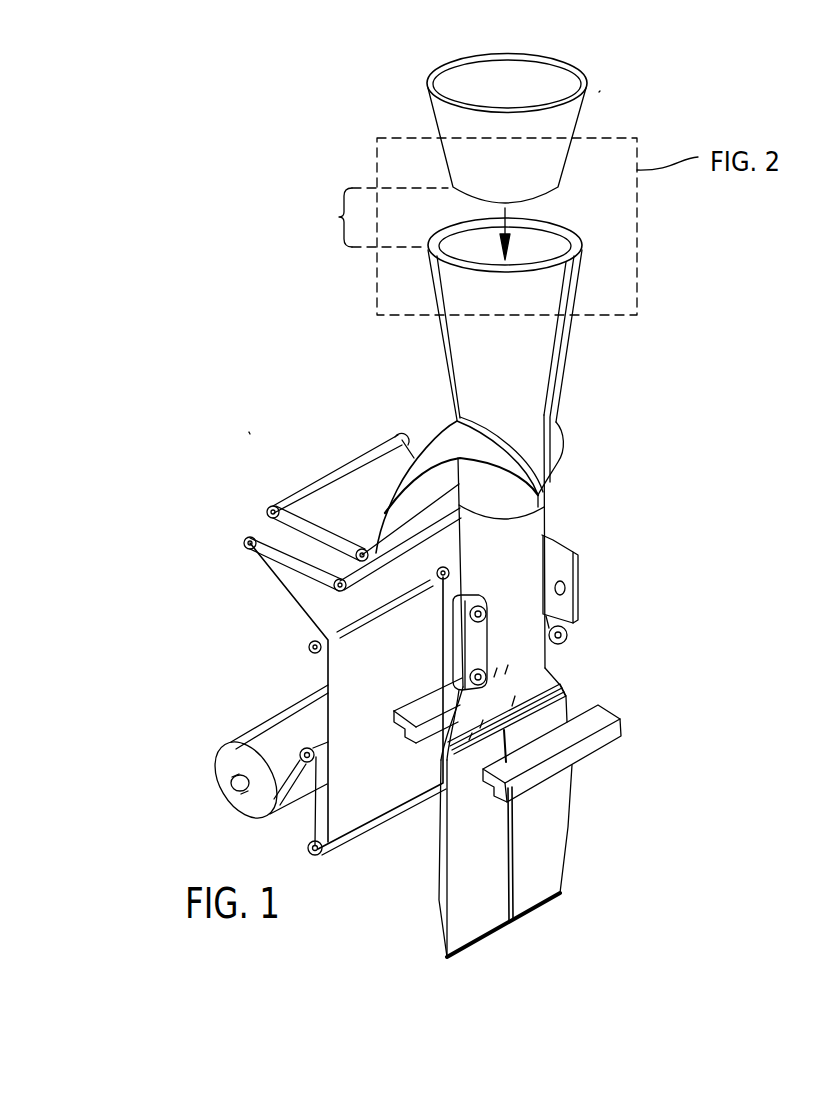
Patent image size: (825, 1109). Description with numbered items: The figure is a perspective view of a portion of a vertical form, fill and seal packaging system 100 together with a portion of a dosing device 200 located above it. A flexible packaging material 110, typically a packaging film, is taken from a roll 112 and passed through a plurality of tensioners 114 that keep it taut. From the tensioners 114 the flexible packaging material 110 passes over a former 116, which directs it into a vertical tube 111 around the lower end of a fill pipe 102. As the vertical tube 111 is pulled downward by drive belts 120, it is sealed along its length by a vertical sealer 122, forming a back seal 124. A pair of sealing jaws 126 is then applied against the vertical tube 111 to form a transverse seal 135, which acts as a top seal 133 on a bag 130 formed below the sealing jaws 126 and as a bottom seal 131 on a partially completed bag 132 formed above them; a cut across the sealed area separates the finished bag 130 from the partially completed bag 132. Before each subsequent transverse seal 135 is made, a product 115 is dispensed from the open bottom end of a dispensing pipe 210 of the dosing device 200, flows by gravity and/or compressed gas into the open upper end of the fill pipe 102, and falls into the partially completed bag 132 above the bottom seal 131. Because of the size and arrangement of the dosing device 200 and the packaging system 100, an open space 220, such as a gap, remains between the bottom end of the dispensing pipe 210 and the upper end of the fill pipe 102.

The packaging system 100 is at (249, 432).
The fill pipe 102 is at (442, 352).
The flexible packaging material 110 is at (356, 480).
The vertical tube 111 is at (512, 535).
The roll 112 is at (233, 764).
The tensioners 114 is at (267, 512).
The product 115 is at (510, 213).
The former 116 is at (556, 490).
The drive belts 120 is at (459, 641).
The vertical sealer 122 is at (576, 575).
The back seal 124 is at (522, 813).
The sealing jaws 126 is at (601, 739).
The bag 130 is at (548, 862).
The bottom seal 131 is at (558, 681).
The partially completed bag 132 is at (530, 672).
The top seal 133 is at (601, 703).
The transverse seal 135 is at (563, 689).
The dosing device 200 is at (600, 91).
The dispensing pipe 210 is at (429, 113).
The open space 220 is at (369, 217).